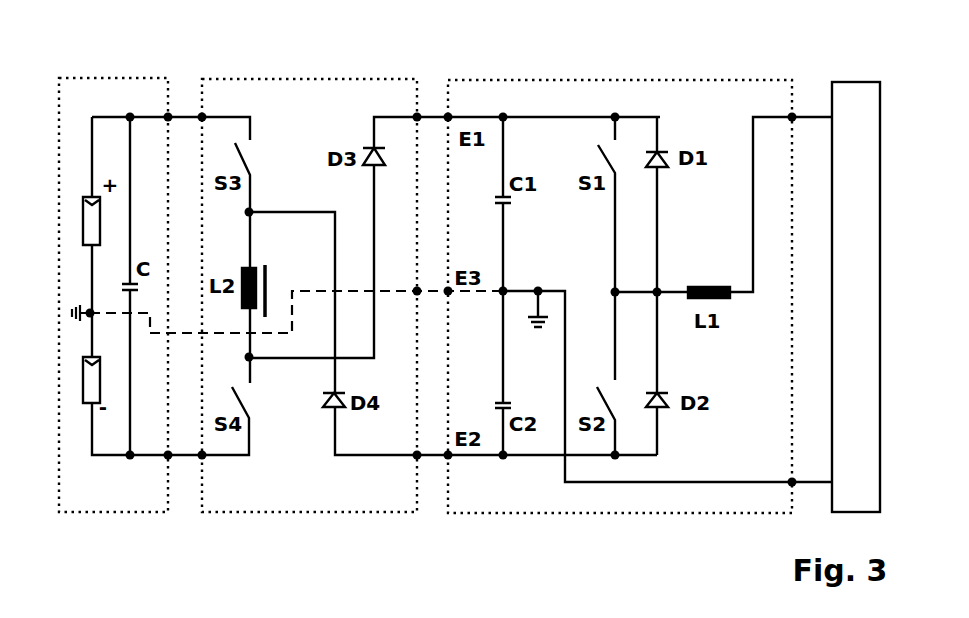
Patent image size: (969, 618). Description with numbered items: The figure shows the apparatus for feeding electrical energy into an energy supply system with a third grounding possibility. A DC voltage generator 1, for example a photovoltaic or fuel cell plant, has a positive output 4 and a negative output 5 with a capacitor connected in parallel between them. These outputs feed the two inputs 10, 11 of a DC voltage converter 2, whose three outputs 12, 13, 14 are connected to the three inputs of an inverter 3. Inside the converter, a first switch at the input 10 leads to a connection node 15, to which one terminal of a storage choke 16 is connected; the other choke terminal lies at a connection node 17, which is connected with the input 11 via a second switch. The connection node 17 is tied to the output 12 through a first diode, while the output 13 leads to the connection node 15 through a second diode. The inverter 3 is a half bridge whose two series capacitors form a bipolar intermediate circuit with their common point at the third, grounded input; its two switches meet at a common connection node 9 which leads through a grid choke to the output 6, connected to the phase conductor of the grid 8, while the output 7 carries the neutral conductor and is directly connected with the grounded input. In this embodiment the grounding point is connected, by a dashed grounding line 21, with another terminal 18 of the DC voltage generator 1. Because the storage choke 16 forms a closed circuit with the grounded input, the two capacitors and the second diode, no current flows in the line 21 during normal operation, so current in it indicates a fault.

The DC voltage generator 1 is at (78, 80).
The DC voltage converter 2 is at (301, 81).
The inverter 3 is at (609, 82).
The output 4 is at (170, 115).
The output 5 is at (169, 457).
The output 6 is at (794, 115).
The output 7 is at (790, 484).
The grid 8 is at (865, 77).
The connection node 9 is at (614, 290).
The input 10 is at (204, 115).
The input 11 is at (203, 457).
The output 12 is at (420, 114).
The output 13 is at (418, 457).
The output 14 is at (416, 290).
The connection node 15 is at (251, 211).
The storage choke 16 is at (267, 291).
The connection node 17 is at (250, 360).
The terminal 18 is at (92, 315).
The grounding line 21 is at (310, 293).